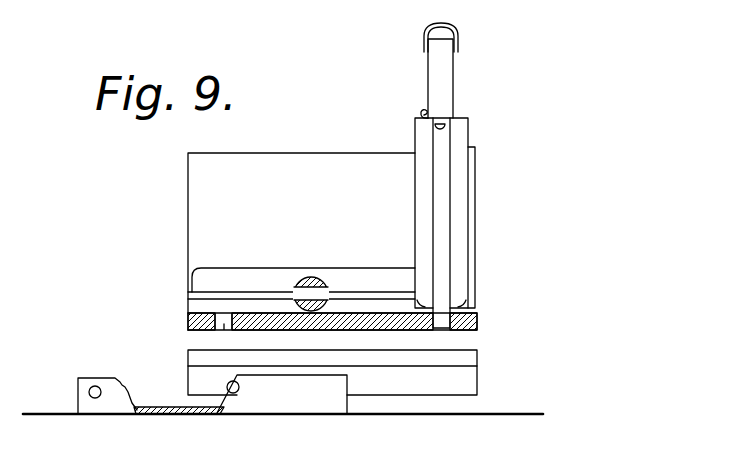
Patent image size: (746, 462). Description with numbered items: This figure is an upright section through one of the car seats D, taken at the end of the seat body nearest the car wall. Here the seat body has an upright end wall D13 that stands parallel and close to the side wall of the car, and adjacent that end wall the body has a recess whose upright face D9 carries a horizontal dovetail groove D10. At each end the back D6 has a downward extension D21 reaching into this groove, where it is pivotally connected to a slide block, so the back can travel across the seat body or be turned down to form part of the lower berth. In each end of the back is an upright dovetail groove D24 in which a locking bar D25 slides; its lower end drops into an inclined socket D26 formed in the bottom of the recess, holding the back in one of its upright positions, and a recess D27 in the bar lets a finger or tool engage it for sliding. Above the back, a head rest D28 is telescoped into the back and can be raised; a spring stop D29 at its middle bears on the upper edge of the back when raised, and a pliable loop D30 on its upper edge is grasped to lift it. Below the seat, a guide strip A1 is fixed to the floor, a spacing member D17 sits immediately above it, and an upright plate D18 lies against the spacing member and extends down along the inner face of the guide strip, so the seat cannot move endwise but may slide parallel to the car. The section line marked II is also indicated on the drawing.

The seat D is at (144, 186).
The upright end wall D13 is at (301, 241).
The upright face D9 is at (198, 279).
The dovetail groove D10 is at (188, 295).
The socket D26 is at (222, 332).
The spacing member D17 is at (462, 353).
The upright plate D18 is at (463, 380).
The guide strip A1 is at (290, 393).
The base line II is at (477, 414).
The upright dovetail groove D24 is at (452, 213).
The locking bar D25 is at (445, 248).
The back D6 is at (460, 192).
The downward extension D21 is at (463, 283).
The head rest D28 is at (435, 80).
The pliable loop D30 is at (427, 33).
The spring stop D29 is at (418, 113).
The recess D27 is at (452, 122).